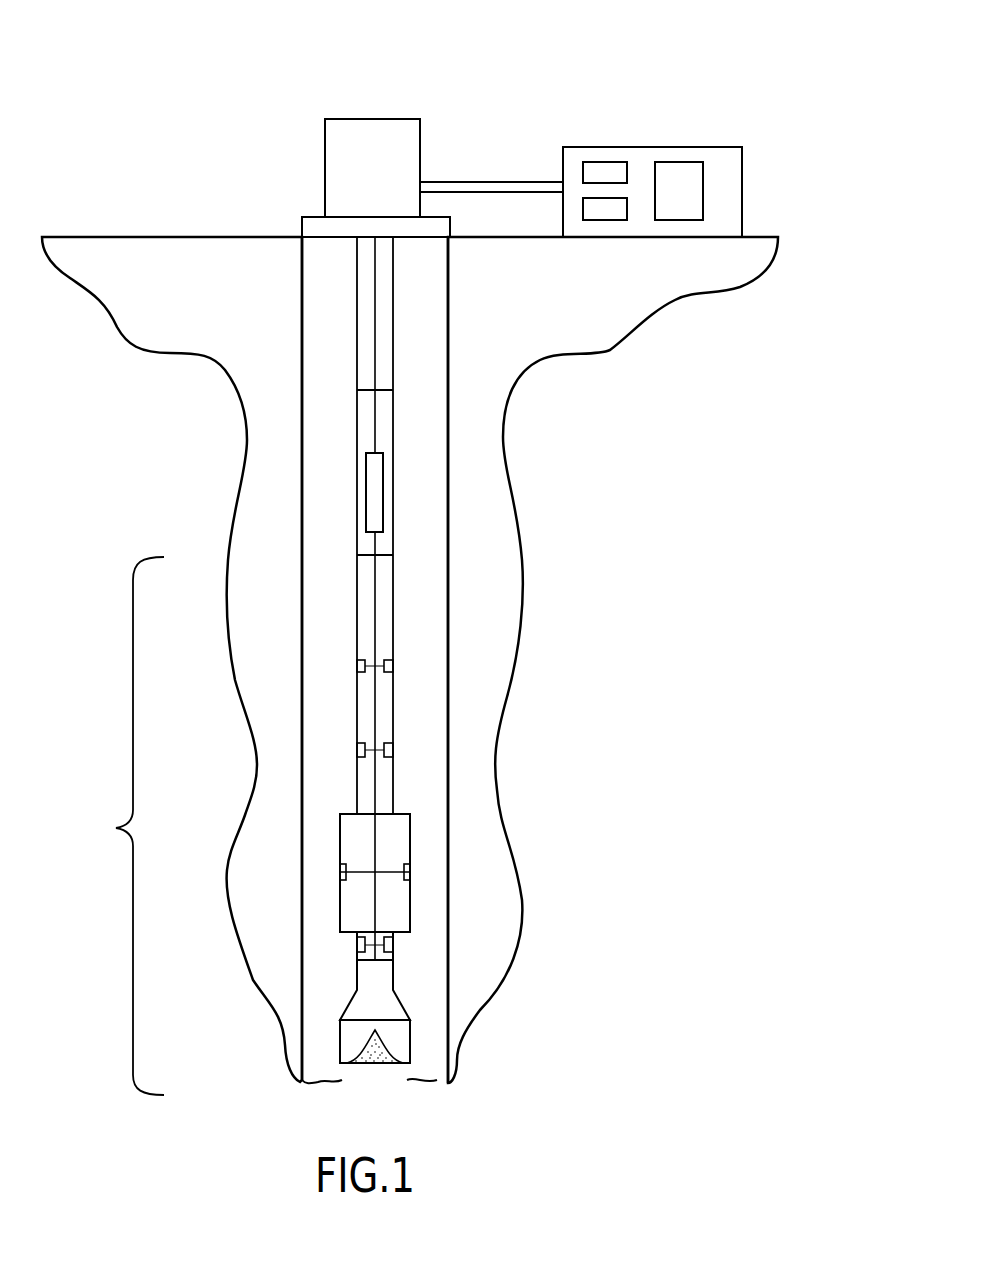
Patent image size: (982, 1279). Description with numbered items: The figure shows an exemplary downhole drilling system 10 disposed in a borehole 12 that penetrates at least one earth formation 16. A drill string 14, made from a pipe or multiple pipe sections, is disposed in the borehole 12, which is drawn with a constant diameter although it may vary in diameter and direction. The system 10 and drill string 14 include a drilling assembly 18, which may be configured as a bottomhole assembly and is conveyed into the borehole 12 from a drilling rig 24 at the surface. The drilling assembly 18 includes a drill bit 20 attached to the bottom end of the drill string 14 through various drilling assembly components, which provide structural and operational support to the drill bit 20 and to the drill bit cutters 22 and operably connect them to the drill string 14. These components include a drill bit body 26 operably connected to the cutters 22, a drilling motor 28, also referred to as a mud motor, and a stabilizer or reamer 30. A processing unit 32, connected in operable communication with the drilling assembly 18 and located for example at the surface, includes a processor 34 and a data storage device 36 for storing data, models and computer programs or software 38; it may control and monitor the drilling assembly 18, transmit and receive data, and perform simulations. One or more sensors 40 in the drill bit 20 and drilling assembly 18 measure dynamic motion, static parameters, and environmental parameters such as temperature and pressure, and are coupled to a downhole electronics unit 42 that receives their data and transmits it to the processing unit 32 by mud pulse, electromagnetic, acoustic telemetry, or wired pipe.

The downhole drilling system 10 is at (187, 97).
The borehole 12 is at (432, 538).
The drill string 14 is at (393, 472).
The earth formation 16 is at (143, 327).
The drilling assembly 18 is at (124, 828).
The drill bit 20 is at (325, 1040).
The drill bit cutters 22 is at (383, 1065).
The drilling rig 24 is at (377, 133).
The drill bit body 26 is at (387, 1008).
The drilling motor 28 is at (382, 698).
The stabilizer or reamer 30 is at (402, 892).
The processing unit 32 is at (632, 148).
The processor 34 is at (608, 167).
The data storage device 36 is at (592, 207).
The computer programs or software 38 is at (680, 167).
The sensors 40 is at (357, 665).
The downhole electronics unit 42 is at (370, 490).